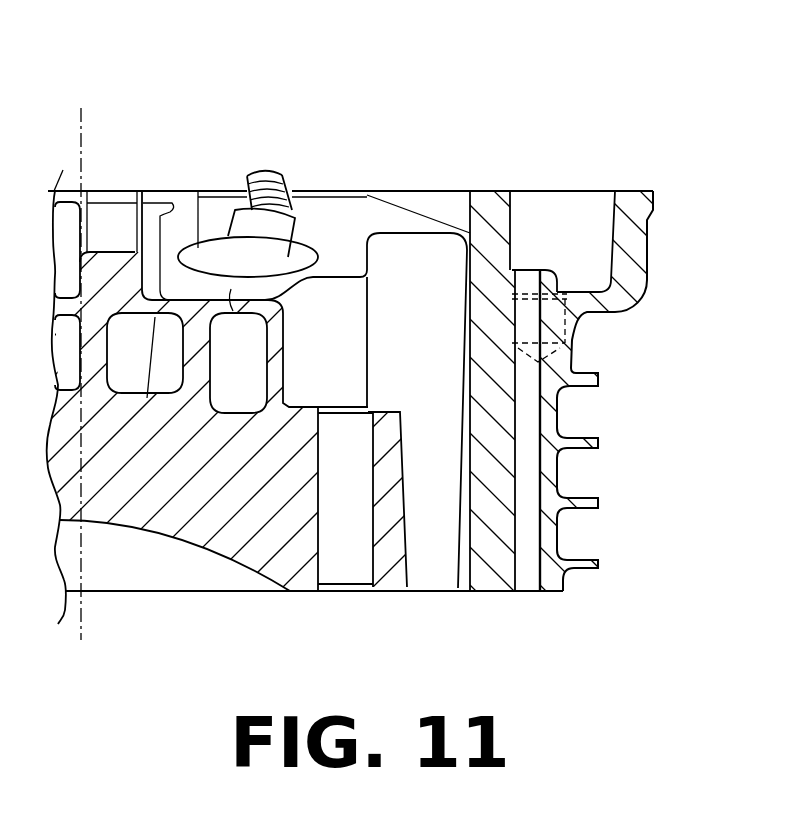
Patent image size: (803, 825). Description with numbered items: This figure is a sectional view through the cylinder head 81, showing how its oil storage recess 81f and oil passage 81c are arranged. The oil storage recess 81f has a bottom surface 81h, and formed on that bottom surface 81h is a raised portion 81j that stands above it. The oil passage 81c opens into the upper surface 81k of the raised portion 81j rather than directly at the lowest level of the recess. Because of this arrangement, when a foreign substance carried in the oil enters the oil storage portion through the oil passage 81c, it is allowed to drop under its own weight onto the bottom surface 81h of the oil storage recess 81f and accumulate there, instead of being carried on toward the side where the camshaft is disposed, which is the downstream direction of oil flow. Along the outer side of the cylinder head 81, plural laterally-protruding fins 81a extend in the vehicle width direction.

The cylinder head 81 is at (177, 165).
The fins 81a is at (585, 565).
The oil passage 81c is at (540, 470).
The oil storage recess 81f is at (613, 225).
The bottom surface 81h is at (590, 292).
The raised portion 81j is at (556, 282).
The upper surface 81k is at (526, 270).